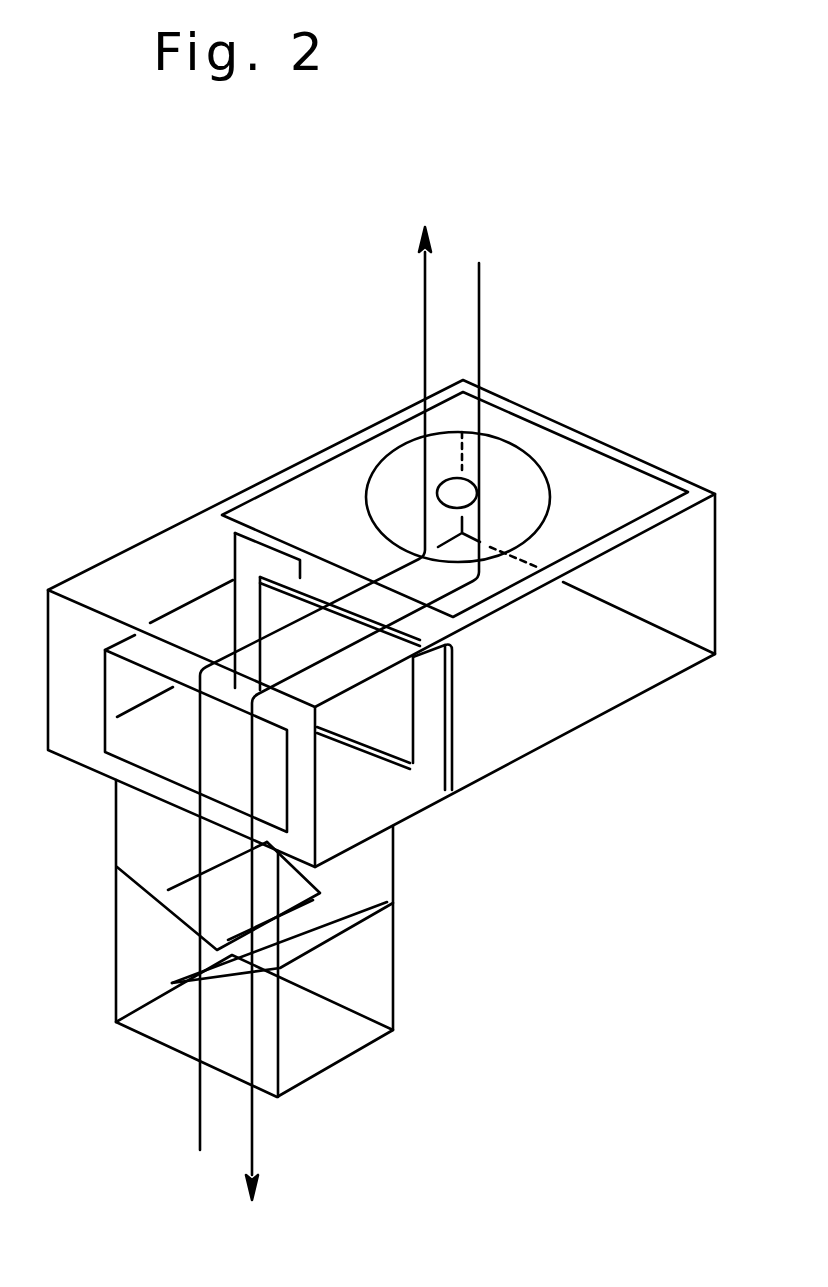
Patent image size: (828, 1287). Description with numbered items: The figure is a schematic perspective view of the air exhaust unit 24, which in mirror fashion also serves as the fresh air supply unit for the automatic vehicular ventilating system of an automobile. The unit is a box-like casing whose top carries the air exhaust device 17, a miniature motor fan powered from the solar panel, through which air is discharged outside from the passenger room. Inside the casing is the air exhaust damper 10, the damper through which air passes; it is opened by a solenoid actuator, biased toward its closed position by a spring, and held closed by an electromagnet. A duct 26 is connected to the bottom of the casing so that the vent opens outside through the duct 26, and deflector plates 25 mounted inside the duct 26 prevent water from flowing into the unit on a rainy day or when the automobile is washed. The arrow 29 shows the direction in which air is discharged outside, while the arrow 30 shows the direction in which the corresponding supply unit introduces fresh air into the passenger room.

The air exhaust unit 24 is at (706, 367).
The air exhaust device 17 is at (400, 462).
The air exhaust damper 10 is at (592, 822).
The deflector plates 25 is at (137, 872).
The duct 26 is at (395, 976).
The arrow 29 is at (377, 710).
The arrow 30 is at (325, 665).